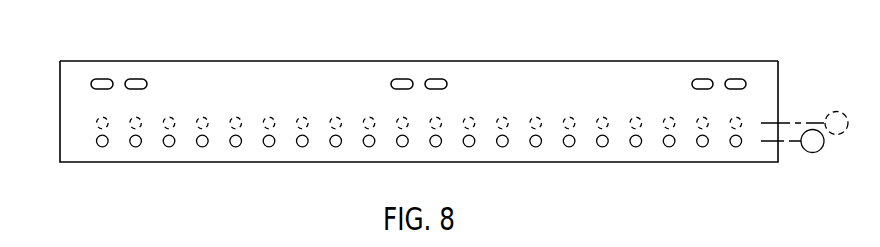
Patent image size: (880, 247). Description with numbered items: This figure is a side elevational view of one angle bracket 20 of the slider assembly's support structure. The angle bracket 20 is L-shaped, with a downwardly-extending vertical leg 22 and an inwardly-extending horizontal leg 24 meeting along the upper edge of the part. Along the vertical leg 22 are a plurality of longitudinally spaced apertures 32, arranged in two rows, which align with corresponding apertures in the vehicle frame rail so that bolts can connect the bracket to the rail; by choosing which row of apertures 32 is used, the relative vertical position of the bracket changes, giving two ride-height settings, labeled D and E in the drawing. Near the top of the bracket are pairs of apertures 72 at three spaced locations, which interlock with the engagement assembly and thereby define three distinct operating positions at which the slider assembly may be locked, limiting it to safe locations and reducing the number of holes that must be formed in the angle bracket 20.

The angle bracket 20 is at (258, 62).
The vertical leg 22 is at (76, 110).
The horizontal leg 24 is at (528, 61).
The apertures 32 is at (137, 147).
The apertures 72 is at (141, 79).